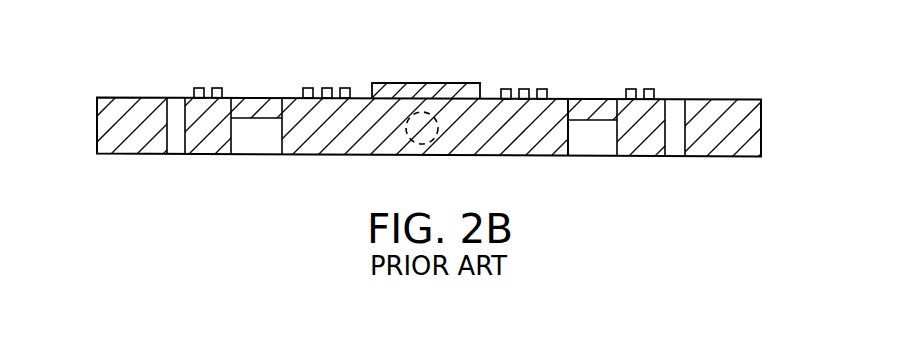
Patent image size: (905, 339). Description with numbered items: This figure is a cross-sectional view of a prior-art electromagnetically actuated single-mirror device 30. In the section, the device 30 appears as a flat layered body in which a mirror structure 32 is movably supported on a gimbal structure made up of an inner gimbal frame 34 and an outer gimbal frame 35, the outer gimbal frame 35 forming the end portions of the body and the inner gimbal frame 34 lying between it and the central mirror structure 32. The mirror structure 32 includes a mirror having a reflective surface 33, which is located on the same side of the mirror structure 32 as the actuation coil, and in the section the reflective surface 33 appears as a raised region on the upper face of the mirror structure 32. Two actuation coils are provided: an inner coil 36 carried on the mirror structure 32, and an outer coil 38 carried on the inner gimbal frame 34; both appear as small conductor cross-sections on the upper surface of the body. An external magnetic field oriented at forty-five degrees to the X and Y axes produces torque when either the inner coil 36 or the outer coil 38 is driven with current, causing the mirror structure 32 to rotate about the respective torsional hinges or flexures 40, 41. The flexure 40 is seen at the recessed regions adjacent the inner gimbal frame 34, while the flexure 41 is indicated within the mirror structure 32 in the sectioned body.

The electromagnetically actuated single-mirror device 30 is at (53, 62).
The mirror structure 32 is at (317, 143).
The reflective surface 33 is at (415, 83).
The inner gimbal frame 34 is at (205, 146).
The outer gimbal frame 35 is at (97, 127).
The inner coil 36 is at (325, 87).
The outer coil 38 is at (196, 87).
The torsional hinge 40 is at (272, 97).
The torsional hinge 41 is at (422, 144).